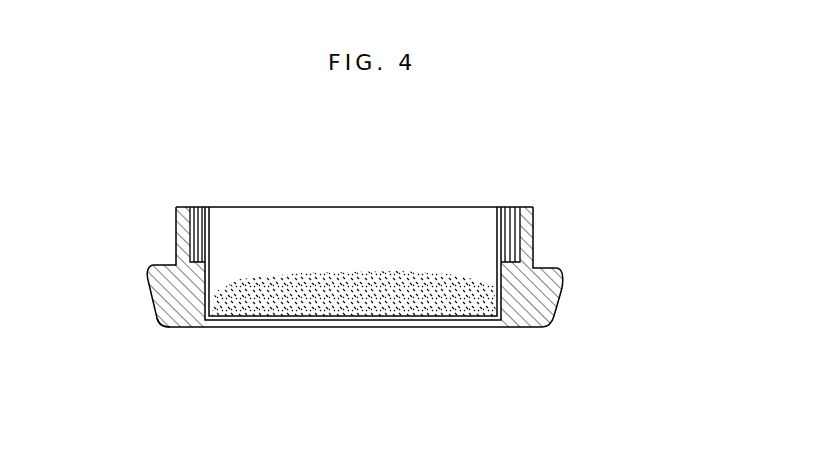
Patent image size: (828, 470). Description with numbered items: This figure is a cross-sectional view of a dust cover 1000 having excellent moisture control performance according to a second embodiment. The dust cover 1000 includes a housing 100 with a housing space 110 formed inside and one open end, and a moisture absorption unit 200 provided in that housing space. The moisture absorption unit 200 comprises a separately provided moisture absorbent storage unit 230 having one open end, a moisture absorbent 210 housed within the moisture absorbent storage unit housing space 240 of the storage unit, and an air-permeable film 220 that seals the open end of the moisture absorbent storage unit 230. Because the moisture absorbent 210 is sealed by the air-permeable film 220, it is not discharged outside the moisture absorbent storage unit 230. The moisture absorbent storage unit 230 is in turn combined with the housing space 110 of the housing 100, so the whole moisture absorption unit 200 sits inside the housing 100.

The dust cover 1000 is at (195, 368).
The housing 100 is at (548, 324).
The housing space 110 is at (202, 207).
The moisture absorption unit 200 is at (598, 157).
The moisture absorbent 210 is at (515, 244).
The air-permeable film 220 is at (497, 207).
The moisture absorbent storage unit 230 is at (161, 321).
The moisture absorbent storage unit housing space 240 is at (417, 231).